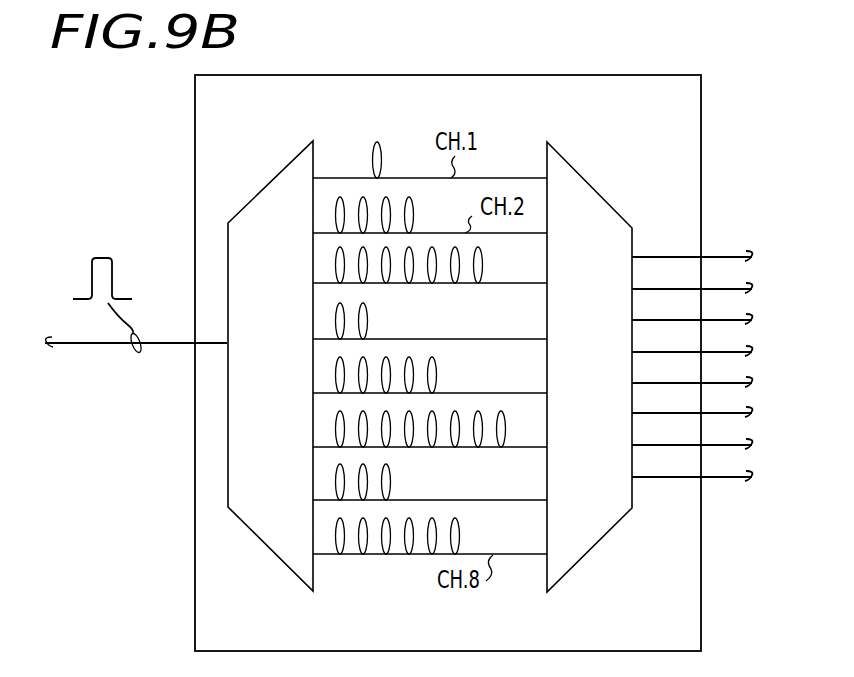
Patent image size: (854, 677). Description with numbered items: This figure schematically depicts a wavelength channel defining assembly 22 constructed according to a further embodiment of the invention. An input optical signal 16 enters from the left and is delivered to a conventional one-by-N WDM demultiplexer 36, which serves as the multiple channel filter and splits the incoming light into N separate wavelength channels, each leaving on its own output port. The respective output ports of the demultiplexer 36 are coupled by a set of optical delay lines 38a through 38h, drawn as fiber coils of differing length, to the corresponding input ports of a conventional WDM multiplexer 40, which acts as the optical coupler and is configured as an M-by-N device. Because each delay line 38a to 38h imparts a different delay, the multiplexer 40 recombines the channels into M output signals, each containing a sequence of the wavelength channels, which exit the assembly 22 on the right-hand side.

The wavelength channel defining assembly 22 is at (600, 75).
The input optical signal with pulse 16 is at (113, 253).
The WDM demultiplexer 36 is at (260, 193).
The WDM multiplexer 40 is at (596, 190).
The optical delay line 38a is at (332, 178).
The optical delay line 38h is at (318, 556).